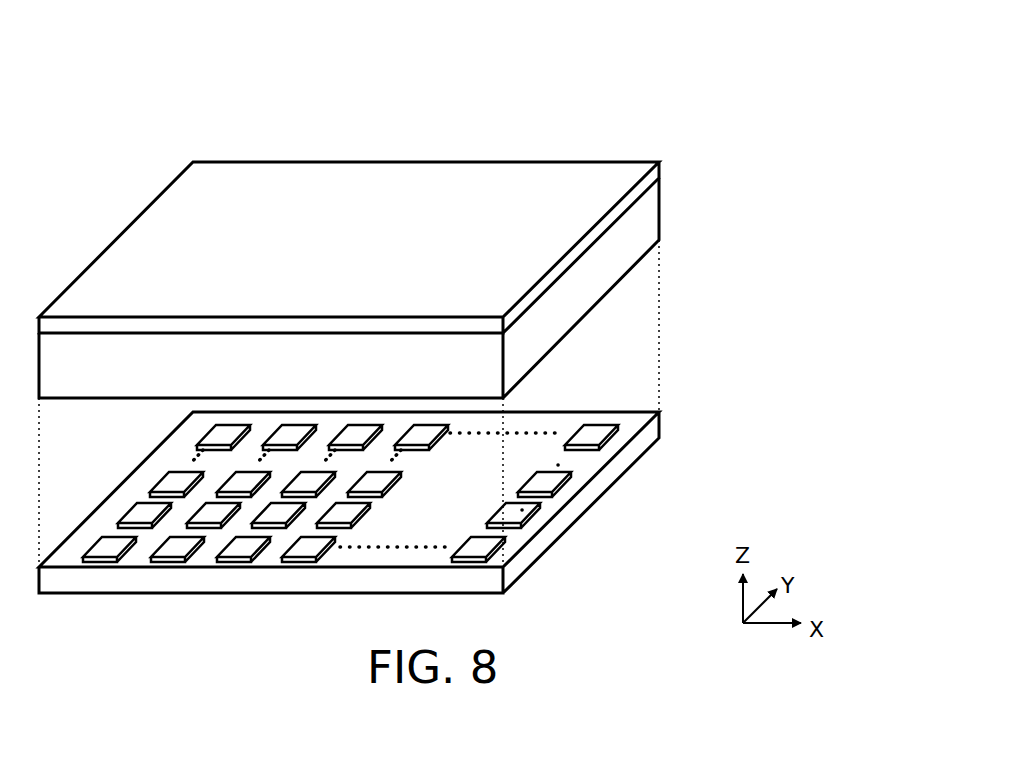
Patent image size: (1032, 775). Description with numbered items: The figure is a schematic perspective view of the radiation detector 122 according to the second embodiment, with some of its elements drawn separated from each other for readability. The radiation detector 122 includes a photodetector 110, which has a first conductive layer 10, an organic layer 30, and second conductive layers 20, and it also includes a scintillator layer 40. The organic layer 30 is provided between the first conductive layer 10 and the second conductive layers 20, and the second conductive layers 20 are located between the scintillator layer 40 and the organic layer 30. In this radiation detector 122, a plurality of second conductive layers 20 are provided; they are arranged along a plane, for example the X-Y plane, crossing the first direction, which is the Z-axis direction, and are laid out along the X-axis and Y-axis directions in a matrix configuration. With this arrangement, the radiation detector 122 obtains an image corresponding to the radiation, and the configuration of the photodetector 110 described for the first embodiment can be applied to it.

The first conductive layer 10 is at (652, 181).
The organic layer 30 is at (652, 232).
The scintillator layer 40 is at (650, 432).
The second conductive layer 20 is at (103, 548).
The radiation detector 122 is at (752, 126).
The photodetector 110 is at (782, 200).